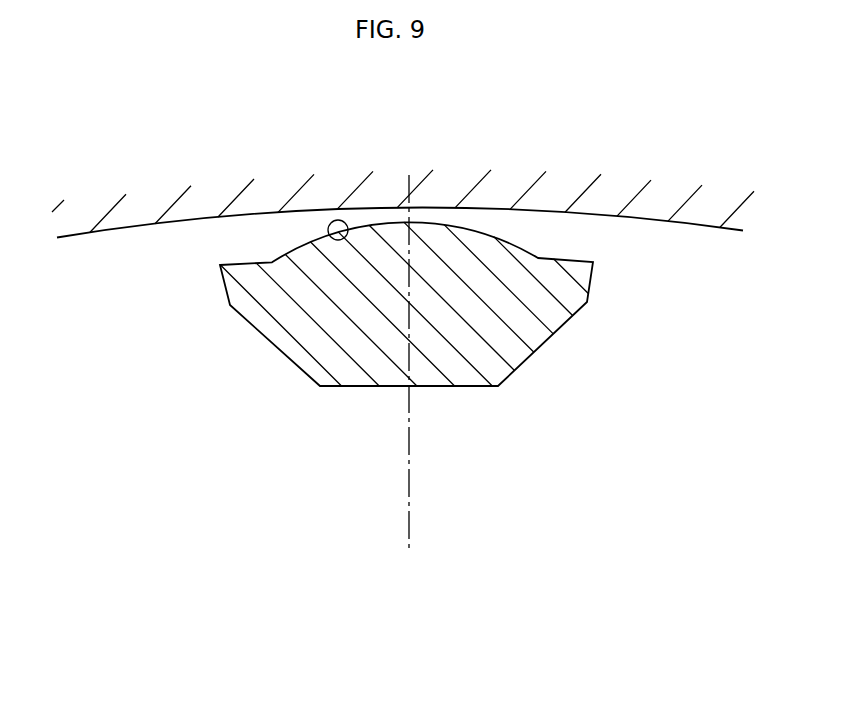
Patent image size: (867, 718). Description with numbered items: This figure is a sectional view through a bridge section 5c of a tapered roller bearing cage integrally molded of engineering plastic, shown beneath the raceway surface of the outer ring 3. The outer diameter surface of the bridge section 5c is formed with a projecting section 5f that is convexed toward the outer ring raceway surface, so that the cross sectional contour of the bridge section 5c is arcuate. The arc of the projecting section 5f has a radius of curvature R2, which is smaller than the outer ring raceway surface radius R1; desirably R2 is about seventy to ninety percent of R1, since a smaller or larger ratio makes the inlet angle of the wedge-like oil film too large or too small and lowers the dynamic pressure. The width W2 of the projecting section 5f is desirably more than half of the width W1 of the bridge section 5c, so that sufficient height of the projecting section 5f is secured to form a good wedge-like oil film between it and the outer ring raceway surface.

The outer ring 3 is at (707, 210).
The bridge section 5c is at (367, 387).
The projecting section 5f is at (345, 240).
The outer ring raceway surface radius R1 is at (642, 220).
The radius of curvature of the projecting section R2 is at (506, 242).
The width of the bridge section W1 is at (593, 253).
The width of the projecting section W2 is at (540, 250).